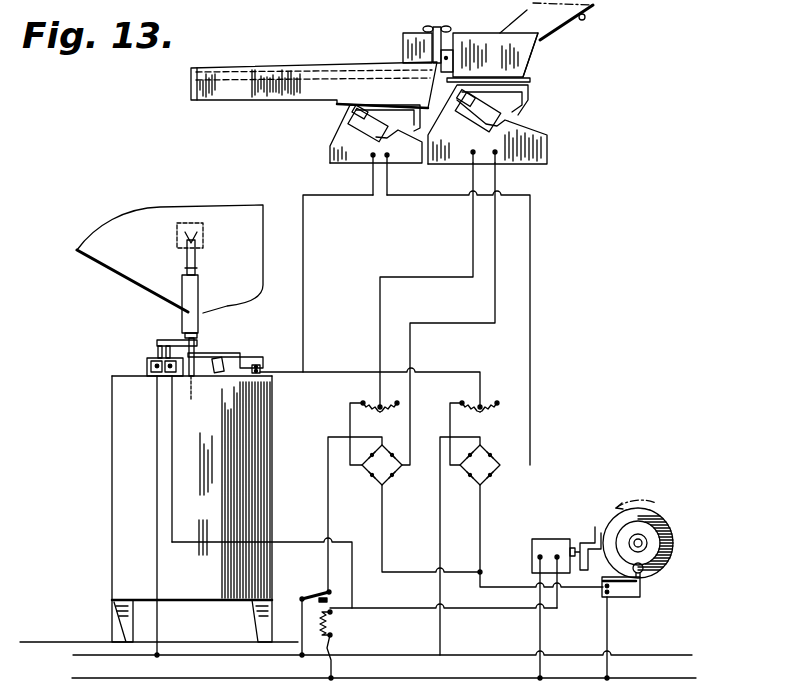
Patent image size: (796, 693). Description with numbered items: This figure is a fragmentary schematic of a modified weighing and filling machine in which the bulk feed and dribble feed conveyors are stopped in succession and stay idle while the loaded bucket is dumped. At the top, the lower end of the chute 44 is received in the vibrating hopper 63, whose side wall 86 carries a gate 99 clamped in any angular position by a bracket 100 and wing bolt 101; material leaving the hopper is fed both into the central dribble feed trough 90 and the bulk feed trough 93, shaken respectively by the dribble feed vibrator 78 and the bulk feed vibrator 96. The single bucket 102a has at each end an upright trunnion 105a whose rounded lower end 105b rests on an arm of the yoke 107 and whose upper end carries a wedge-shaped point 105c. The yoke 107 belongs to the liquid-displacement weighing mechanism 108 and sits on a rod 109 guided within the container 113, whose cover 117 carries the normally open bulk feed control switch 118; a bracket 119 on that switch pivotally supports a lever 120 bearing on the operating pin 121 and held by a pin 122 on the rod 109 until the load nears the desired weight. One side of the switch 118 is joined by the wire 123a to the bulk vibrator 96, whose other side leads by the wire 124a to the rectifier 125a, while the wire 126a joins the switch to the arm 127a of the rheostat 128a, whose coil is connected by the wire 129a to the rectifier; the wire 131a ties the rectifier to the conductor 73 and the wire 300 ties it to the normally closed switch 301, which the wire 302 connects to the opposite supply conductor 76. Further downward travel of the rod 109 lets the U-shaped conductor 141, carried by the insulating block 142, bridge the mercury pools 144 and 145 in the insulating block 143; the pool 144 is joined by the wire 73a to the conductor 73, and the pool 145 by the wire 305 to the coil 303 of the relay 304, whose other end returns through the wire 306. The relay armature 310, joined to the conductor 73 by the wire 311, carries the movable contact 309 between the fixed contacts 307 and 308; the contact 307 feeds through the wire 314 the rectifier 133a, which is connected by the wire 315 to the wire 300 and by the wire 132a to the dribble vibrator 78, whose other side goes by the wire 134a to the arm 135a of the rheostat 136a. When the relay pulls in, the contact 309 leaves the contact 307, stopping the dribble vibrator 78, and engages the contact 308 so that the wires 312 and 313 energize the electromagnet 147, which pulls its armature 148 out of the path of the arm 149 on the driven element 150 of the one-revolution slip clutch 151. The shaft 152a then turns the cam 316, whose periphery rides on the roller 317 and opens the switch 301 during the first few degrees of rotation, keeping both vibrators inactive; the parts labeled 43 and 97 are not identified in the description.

The pivot pin 43 is at (584, 19).
The chute 44 is at (538, 20).
The vibrating hopper 63 is at (522, 57).
The conductor 73 is at (677, 655).
The wire 73a is at (140, 575).
The supply conductor 76 is at (688, 678).
The dribble feed vibrator 78 is at (547, 147).
The hopper side wall 86 is at (470, 42).
The dribble feed trough 90 is at (274, 72).
The bulk feed trough 93 is at (256, 96).
The bulk feed vibrator 96 is at (330, 153).
The guide slot 97 is at (229, 70).
The gate 99 is at (403, 40).
The bracket 100 is at (455, 57).
The wing bolt 101 is at (438, 27).
The bucket 102a is at (147, 283).
The trunnion 105a is at (197, 260).
The rounded lower end 105b is at (187, 268).
The wedge-shaped point 105c is at (197, 237).
The yoke 107 is at (200, 292).
The weighing mechanism 108 is at (115, 490).
The rod 109 is at (195, 337).
The container 113 is at (112, 575).
The cover 117 is at (112, 377).
The bulk feed control switch 118 is at (240, 382).
The bracket 119 is at (238, 347).
The lever 120 is at (243, 357).
The operating pin 121 is at (262, 366).
The pin 122 is at (190, 378).
The wire 123a is at (303, 240).
The wire 124a is at (530, 395).
The rectifier 125a is at (500, 470).
The wire 126a is at (470, 372).
The rheostat arm 127a is at (482, 403).
The rheostat 128a is at (489, 414).
The wire 129a is at (450, 405).
The wire 131a is at (440, 640).
The wire 132a is at (496, 305).
The rectifier 133a is at (400, 470).
The wire 134a is at (415, 277).
The rheostat arm 135a is at (365, 402).
The rheostat 136a is at (400, 422).
The U-shaped conductor 141 is at (160, 345).
The insulating block 142 is at (185, 340).
The insulating block 143 is at (147, 368).
The mercury pool 144 is at (147, 362).
The mercury pool 145 is at (172, 376).
The electromagnet 147 is at (545, 545).
The armature 148 is at (597, 560).
The arm 149 is at (583, 542).
The driven clutch element 150 is at (672, 552).
The one-revolution clutch 151 is at (675, 516).
The shaft 152a is at (648, 540).
The wire 300 is at (480, 535).
The normally closed switch 301 is at (642, 590).
The wire 302 is at (607, 665).
The relay coil 303 is at (332, 618).
The relay 304 is at (322, 645).
The wire 305 is at (172, 495).
The wire 306 is at (331, 678).
The fixed relay contact 307 is at (329, 590).
The fixed relay contact 308 is at (339, 608).
The movable contact 309 is at (318, 596).
The relay armature 310 is at (305, 600).
The wire 311 is at (302, 628).
The wire 312 is at (480, 608).
The wire 313 is at (540, 628).
The wire 314 is at (328, 508).
The wire 315 is at (385, 552).
The cam 316 is at (620, 527).
The roller 317 is at (655, 572).